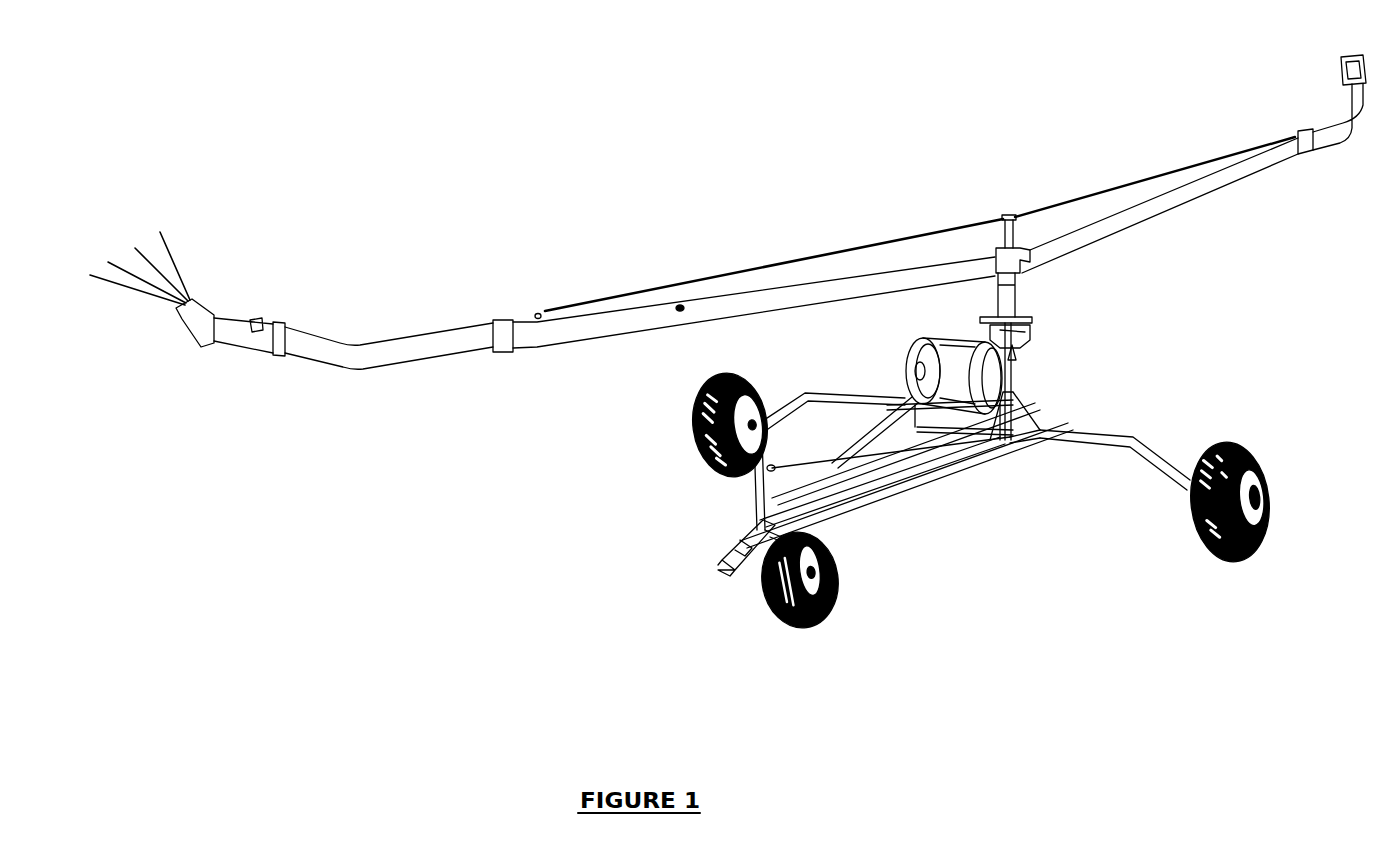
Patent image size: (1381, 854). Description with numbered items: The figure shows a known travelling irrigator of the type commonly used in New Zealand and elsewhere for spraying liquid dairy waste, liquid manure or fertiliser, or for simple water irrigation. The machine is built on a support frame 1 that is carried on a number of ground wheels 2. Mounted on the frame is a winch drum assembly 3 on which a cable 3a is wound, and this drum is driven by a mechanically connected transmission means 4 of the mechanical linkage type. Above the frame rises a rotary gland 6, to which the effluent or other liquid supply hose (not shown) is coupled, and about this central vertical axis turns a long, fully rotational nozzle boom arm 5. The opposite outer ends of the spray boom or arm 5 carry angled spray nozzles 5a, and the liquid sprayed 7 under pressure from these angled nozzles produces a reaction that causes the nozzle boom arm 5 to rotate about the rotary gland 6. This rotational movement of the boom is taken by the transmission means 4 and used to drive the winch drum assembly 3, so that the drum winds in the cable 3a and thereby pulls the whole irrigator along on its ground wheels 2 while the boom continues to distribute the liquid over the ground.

The support frame 1 is at (1077, 432).
The ground wheels 2 is at (1195, 535).
The winch drum assembly 3 is at (983, 368).
The cable 3a is at (938, 370).
The transmission means 4 is at (1020, 340).
The nozzle boom arm 5 is at (433, 357).
The angled spray nozzles 5a is at (208, 317).
The rotary gland 6 is at (1007, 297).
The liquid sprayed 7 is at (153, 277).